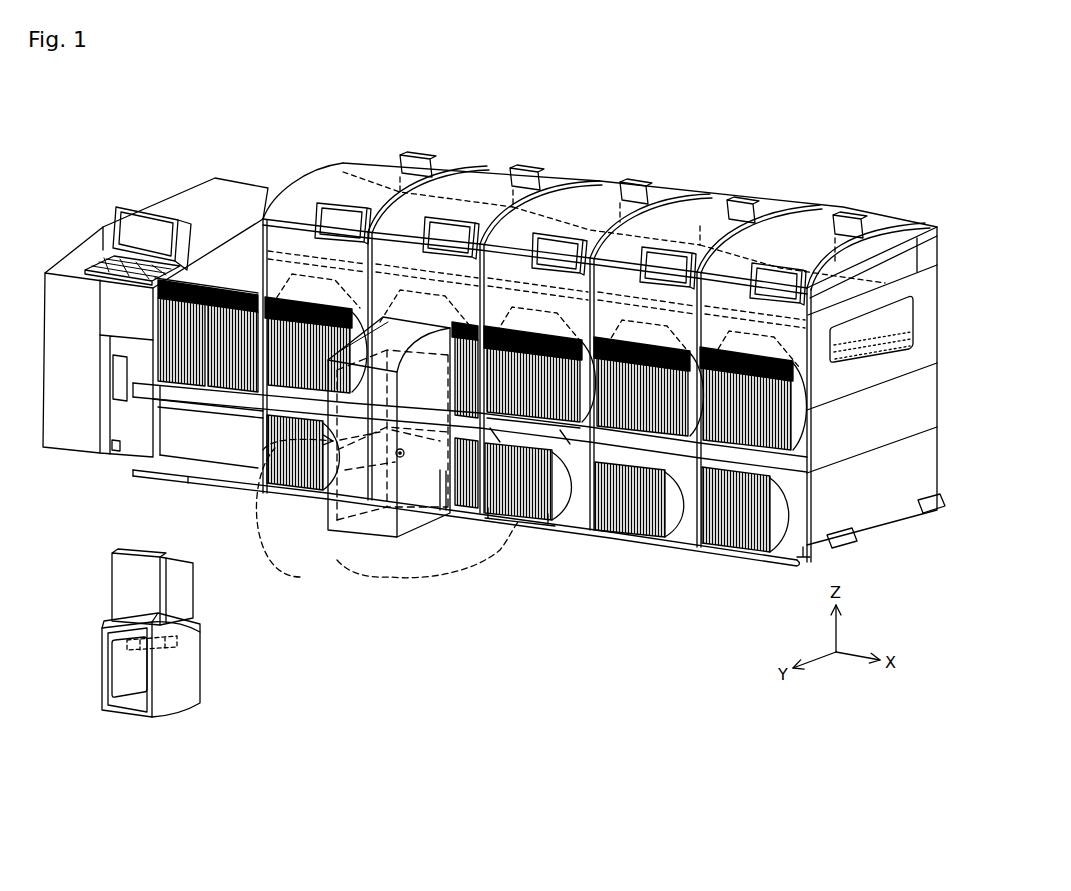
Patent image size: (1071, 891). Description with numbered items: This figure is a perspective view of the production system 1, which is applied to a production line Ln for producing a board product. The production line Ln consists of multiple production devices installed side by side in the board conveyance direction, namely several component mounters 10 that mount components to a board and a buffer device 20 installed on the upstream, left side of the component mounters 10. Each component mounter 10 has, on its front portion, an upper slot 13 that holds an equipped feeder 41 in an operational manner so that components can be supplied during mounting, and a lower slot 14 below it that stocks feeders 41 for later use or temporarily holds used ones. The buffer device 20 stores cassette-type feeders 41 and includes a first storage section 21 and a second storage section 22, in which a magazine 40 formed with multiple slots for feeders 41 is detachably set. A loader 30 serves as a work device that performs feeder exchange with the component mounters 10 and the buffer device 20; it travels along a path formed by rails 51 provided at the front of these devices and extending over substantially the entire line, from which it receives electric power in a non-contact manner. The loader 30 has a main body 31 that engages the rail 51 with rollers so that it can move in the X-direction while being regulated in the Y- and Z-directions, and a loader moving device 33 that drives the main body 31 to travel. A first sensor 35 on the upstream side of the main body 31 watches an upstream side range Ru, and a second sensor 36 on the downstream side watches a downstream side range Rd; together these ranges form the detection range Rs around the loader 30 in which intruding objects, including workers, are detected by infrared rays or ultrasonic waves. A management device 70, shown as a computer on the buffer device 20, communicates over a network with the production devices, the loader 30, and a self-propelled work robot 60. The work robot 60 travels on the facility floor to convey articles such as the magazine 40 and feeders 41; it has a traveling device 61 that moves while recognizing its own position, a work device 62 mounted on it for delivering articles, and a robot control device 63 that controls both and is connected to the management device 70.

The production system 1 is at (575, 152).
The component mounter 10 is at (689, 183).
The upper slot 13 is at (533, 425).
The lower slot 14 is at (521, 521).
The buffer device 20 is at (191, 276).
The first storage section 21 is at (216, 288).
The second storage section 22 is at (250, 288).
The loader 30 is at (444, 531).
The main body 31 is at (350, 397).
The loader moving device 33 is at (408, 480).
The first sensor 35 is at (263, 450).
The second sensor 36 is at (399, 458).
The magazine 40 is at (187, 583).
The feeder 41 is at (167, 333).
The rail 51 is at (710, 468).
The work robot 60 is at (214, 703).
The traveling device 61 is at (115, 670).
The work device 62 is at (123, 583).
The robot control device 63 is at (178, 641).
The management device 70 is at (102, 264).
The production line Ln is at (345, 152).
The upstream side range Ru is at (300, 577).
The downstream side range Rd is at (393, 577).
The detection range Rs is at (390, 695).